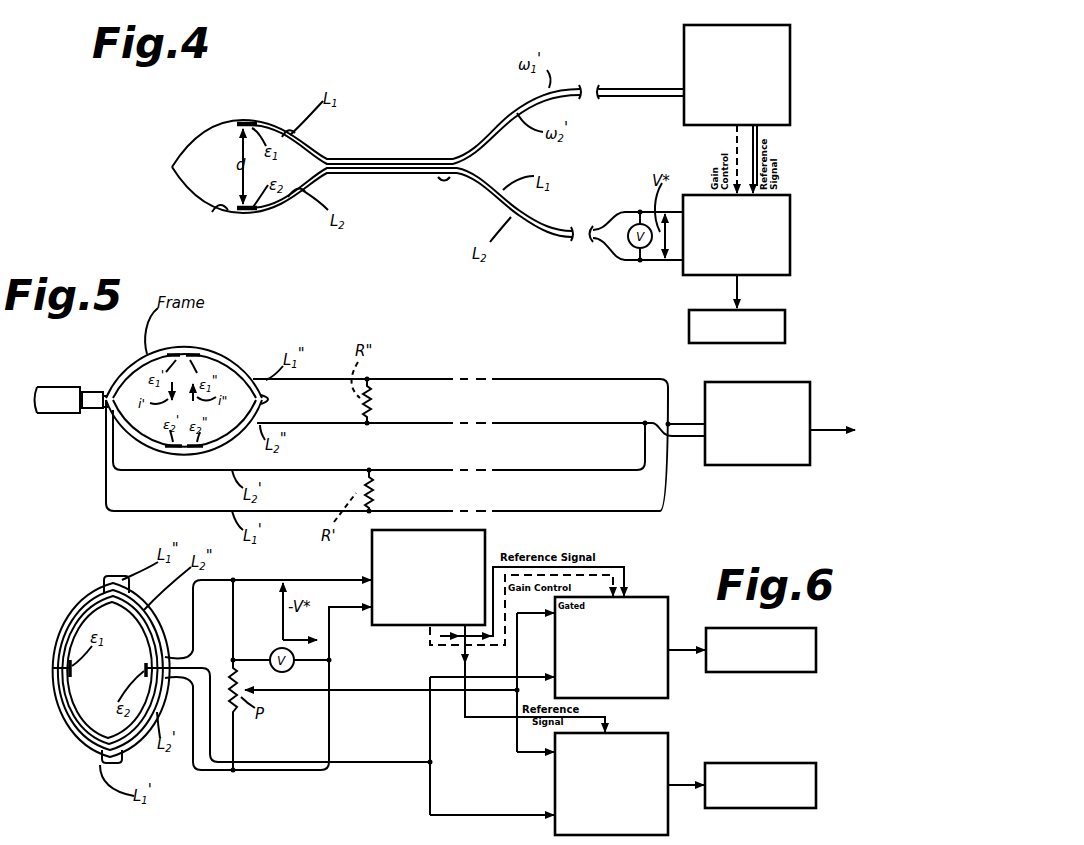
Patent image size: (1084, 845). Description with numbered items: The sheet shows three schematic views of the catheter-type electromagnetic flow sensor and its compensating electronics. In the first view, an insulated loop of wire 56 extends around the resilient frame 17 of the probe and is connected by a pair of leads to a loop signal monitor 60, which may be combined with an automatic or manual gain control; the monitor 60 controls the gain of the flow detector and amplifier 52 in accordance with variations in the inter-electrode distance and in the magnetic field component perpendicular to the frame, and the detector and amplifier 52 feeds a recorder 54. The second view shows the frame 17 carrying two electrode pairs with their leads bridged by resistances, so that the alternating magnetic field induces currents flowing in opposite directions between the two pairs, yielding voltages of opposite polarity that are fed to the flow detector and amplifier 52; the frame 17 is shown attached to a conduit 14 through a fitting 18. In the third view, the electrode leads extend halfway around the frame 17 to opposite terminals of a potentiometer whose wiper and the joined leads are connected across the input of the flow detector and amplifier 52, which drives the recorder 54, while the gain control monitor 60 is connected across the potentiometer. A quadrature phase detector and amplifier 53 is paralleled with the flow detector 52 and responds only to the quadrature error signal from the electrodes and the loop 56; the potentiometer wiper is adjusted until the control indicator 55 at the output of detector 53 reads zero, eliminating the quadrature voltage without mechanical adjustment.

In FIG. 5, the conduit / tube section 14 is at (55, 386).
In FIG. 5, the resilient frame 17 is at (214, 353).
In FIG. 6, the resilient frame 17 is at (77, 719).
In FIG. 5, the connector fitting 18 is at (90, 409).
In FIG. 4, the flow detector and amplifier 52 is at (790, 228).
In FIG. 5, the flow detector and amplifier 52 is at (795, 382).
In FIG. 6, the flow detector and amplifier 52 is at (633, 597).
In FIG. 6, the quadrature phase detector and amplifier 53 is at (633, 733).
In FIG. 4, the recorder 54 is at (785, 315).
In FIG. 6, the recorder 54 is at (816, 640).
In FIG. 6, the indicator 55 is at (785, 763).
In FIG. 4, the insulated loop of wire 56 is at (218, 211).
In FIG. 4, the loop signal monitor 60 is at (790, 47).
In FIG. 6, the loop signal monitor 60 is at (485, 548).